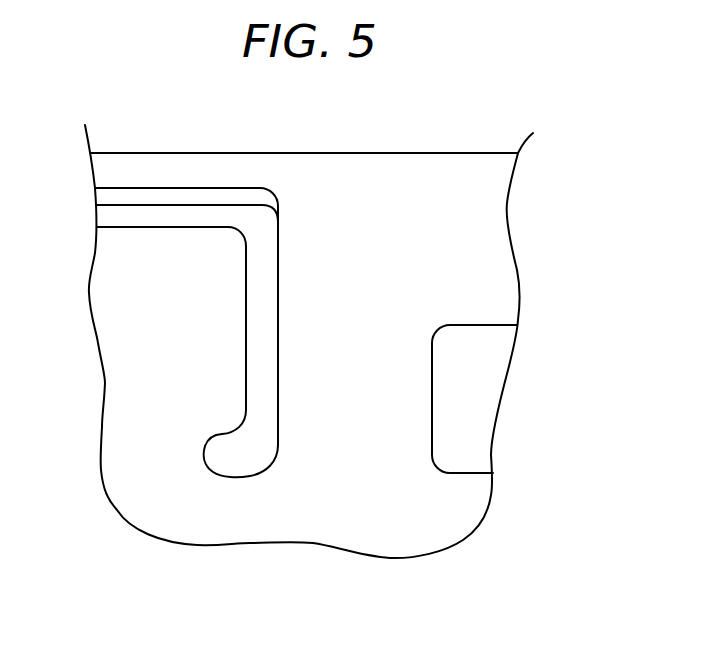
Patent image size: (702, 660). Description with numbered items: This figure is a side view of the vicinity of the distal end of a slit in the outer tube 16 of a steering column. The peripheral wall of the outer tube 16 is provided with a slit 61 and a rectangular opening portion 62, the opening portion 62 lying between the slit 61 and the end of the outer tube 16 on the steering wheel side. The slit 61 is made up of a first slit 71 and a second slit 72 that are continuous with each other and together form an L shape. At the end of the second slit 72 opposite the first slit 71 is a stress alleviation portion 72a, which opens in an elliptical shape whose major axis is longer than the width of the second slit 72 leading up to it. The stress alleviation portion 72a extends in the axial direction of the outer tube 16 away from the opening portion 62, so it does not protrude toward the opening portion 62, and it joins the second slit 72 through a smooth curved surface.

The outer tube 16 is at (358, 152).
The slit 61 is at (162, 255).
The first slit 71 is at (172, 225).
The second slit 72 is at (247, 300).
The stress alleviation portion 72a is at (213, 436).
The opening portion 62 is at (466, 333).